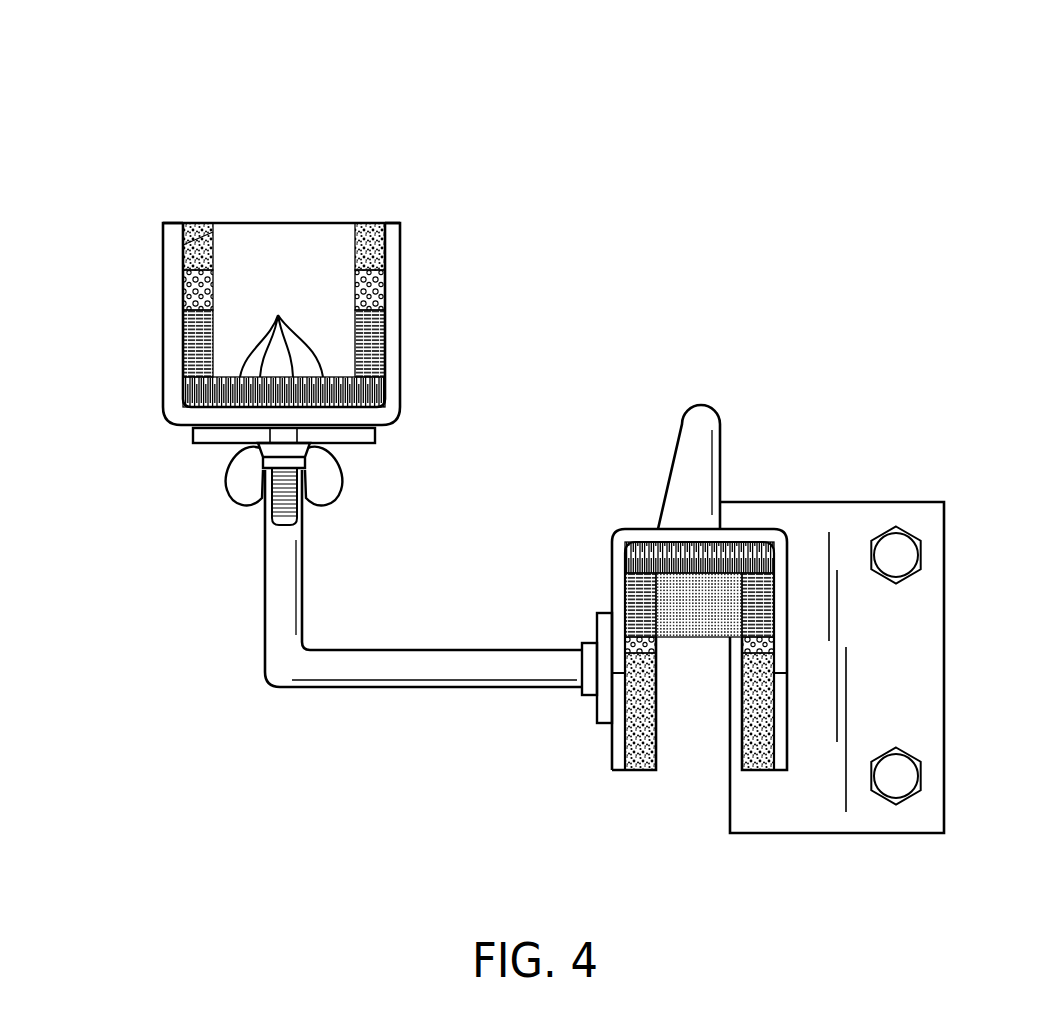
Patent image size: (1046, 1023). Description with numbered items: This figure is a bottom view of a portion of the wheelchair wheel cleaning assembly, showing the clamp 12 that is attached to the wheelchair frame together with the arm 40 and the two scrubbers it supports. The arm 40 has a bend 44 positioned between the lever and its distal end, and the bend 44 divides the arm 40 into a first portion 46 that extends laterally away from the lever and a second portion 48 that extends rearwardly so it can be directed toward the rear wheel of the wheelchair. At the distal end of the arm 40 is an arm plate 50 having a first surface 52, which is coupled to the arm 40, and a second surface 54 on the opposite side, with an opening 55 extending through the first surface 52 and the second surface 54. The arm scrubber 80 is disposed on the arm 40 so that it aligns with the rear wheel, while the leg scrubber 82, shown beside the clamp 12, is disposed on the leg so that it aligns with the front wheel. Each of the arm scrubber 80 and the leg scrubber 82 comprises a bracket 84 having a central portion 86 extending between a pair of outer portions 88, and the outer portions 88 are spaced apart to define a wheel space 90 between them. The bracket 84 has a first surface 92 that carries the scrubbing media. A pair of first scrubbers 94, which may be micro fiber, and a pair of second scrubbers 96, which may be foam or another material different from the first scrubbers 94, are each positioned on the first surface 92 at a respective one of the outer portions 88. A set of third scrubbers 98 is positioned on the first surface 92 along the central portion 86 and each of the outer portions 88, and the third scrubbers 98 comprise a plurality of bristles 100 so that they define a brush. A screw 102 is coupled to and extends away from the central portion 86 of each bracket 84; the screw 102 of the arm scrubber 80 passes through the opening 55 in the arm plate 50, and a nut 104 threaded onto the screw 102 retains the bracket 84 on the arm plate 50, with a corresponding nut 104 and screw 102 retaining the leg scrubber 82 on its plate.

The clamp 12 is at (800, 502).
The arm 40 is at (368, 657).
The bend 44 is at (270, 684).
The first portion 46 is at (520, 684).
The second portion 48 is at (265, 565).
The arm plate 50 is at (368, 445).
The first surface 52 is at (197, 443).
The second surface 54 is at (200, 425).
The opening 55 is at (378, 527).
The arm scrubber 80 is at (289, 240).
The leg scrubber 82 is at (598, 516).
The bracket 84 is at (163, 222).
The central portion 86 is at (224, 428).
The outer portions 88 is at (163, 274).
The wheel space 90 is at (279, 240).
The first surface 92 is at (296, 231).
The first scrubbers 94 is at (195, 223).
The second scrubbers 96 is at (214, 283).
The third scrubbers 98 is at (353, 376).
The bristles 100 is at (281, 323).
The screw 102 is at (284, 524).
The nut 104 is at (327, 498).